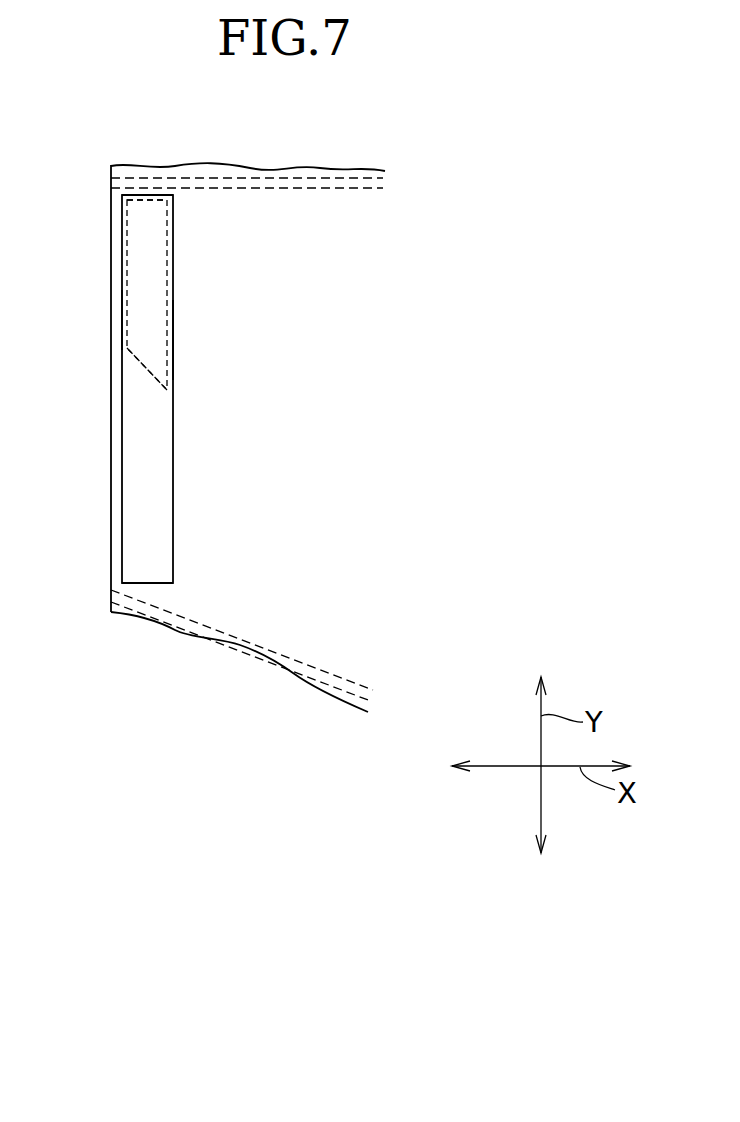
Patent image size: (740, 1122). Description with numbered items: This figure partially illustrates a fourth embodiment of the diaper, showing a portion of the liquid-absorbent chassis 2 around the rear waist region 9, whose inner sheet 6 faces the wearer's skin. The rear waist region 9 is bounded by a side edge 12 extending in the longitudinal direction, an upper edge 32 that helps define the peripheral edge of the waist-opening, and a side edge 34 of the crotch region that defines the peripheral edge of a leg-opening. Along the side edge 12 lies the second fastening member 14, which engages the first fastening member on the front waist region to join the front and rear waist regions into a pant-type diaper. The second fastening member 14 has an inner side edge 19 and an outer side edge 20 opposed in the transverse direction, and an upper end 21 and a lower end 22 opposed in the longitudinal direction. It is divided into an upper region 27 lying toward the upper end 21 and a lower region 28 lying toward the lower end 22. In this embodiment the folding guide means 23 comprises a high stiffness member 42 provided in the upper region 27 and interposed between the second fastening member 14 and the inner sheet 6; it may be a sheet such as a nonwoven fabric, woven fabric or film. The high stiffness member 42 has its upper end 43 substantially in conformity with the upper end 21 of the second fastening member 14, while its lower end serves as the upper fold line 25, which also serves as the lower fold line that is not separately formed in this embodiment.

The liquid-absorbent chassis 2 is at (354, 146).
The inner sheet 6 is at (353, 240).
The rear waist region 9 is at (299, 207).
The side edges of the rear waist region 12 is at (115, 550).
The second fastening member 14 is at (174, 442).
The inner side edge of the second fastening member 19 is at (174, 337).
The outer side edge of the second fastening member 20 is at (124, 320).
The upper end of the second fastening member 21 is at (136, 192).
The lower end of the second fastening member 22 is at (135, 584).
The folding guide means 23 is at (215, 295).
The upper fold line 25 is at (140, 365).
The upper region of the second fastening member 27 is at (138, 267).
The lower region of the second fastening member 28 is at (132, 468).
The upper edge of the rear waist region 32 is at (248, 167).
The side edge of the crotch region 34 is at (242, 648).
The high stiffness member 42 is at (150, 290).
The upper end of the high stiffness member 43 is at (157, 190).